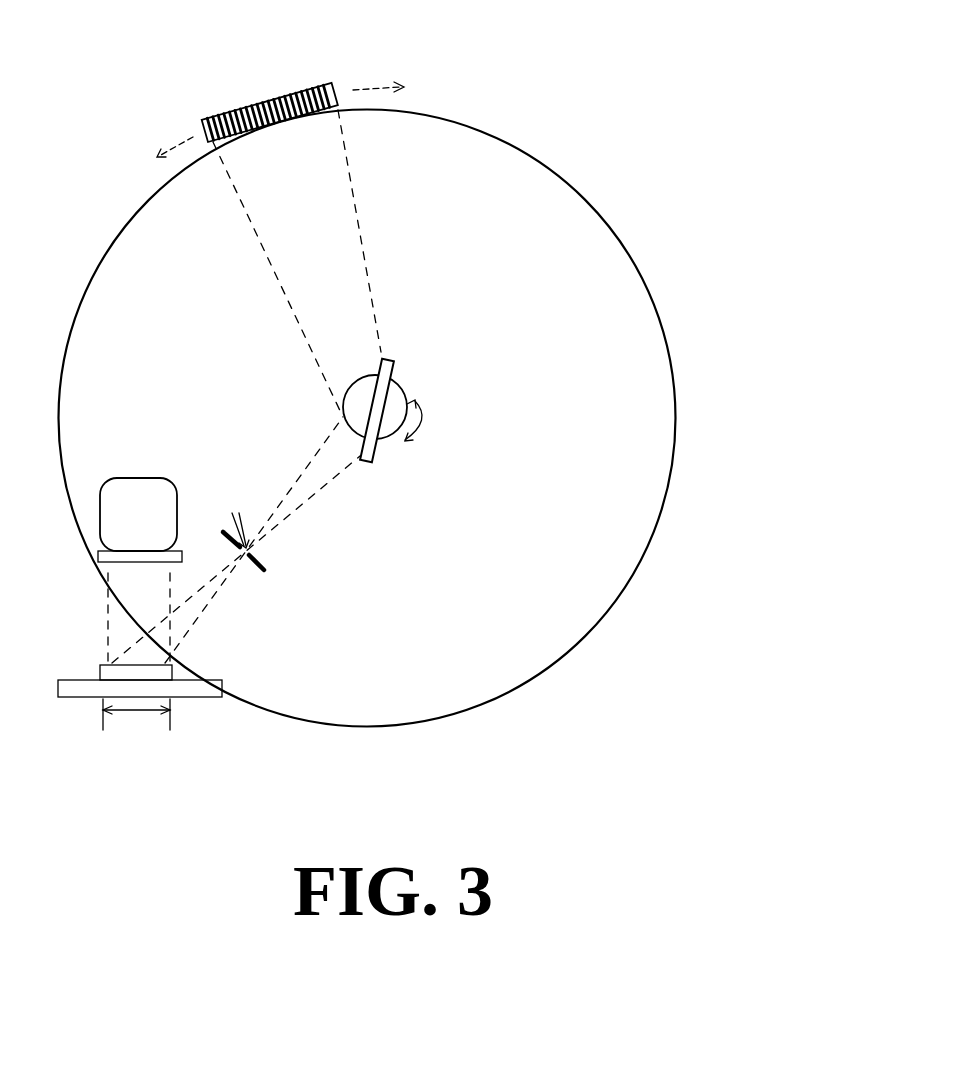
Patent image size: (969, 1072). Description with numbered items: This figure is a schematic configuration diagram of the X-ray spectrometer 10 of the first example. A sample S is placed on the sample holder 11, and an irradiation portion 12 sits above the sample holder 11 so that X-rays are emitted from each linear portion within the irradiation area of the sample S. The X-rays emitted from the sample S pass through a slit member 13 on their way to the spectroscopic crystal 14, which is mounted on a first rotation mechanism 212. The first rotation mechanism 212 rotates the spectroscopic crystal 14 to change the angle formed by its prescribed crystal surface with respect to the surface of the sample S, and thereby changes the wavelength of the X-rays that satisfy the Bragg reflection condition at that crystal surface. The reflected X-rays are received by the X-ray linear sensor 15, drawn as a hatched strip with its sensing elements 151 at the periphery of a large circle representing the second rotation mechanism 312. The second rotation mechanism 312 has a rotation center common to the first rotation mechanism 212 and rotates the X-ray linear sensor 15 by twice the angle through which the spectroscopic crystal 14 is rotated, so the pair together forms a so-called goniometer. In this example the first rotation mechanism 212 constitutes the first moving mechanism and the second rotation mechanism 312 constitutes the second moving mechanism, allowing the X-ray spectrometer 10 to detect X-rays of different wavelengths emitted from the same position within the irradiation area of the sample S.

The X-ray spectrometer 10 is at (708, 157).
The sample holder 11 is at (200, 697).
The irradiation portion 12 is at (145, 488).
The slit member 13 is at (266, 565).
The spectroscopic crystal 14 is at (395, 360).
The X-ray linear sensor 15 is at (333, 82).
The detector pixels 151 is at (219, 114).
The first rotation mechanism 212 is at (408, 392).
The second rotation mechanism 312 is at (633, 255).
The sample S is at (98, 672).